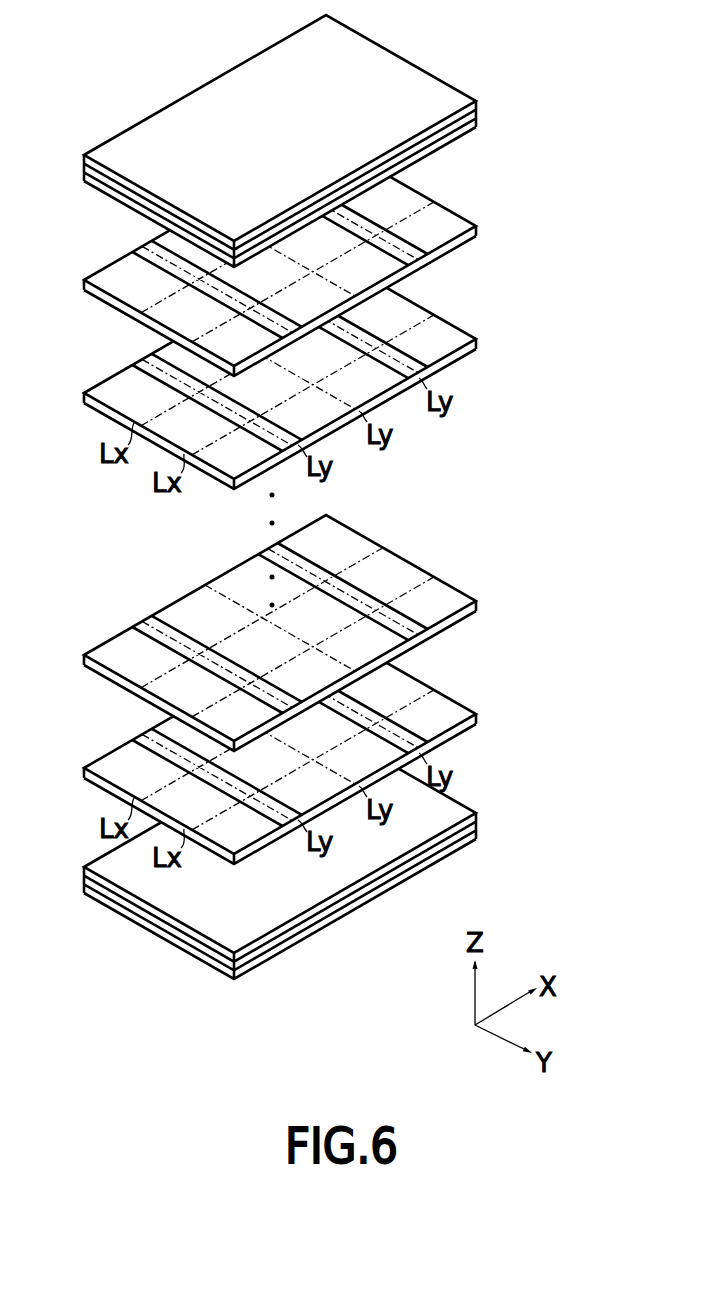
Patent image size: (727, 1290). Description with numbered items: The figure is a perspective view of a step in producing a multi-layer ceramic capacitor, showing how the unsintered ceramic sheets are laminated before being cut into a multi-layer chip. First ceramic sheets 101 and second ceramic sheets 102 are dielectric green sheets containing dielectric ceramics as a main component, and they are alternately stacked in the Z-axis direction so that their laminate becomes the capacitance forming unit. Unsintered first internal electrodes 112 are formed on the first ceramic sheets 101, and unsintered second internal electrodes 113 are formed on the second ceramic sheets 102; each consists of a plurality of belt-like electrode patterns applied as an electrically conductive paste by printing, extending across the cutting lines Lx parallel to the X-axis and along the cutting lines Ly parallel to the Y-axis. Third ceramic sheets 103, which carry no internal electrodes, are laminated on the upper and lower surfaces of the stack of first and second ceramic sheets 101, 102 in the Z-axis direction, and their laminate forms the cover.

The first ceramic sheet 101 is at (495, 219).
The second ceramic sheet 102 is at (495, 331).
The third ceramic sheet 103 is at (495, 108).
The unsintered first internal electrode 112 is at (115, 278).
The unsintered second internal electrode 113 is at (115, 382).